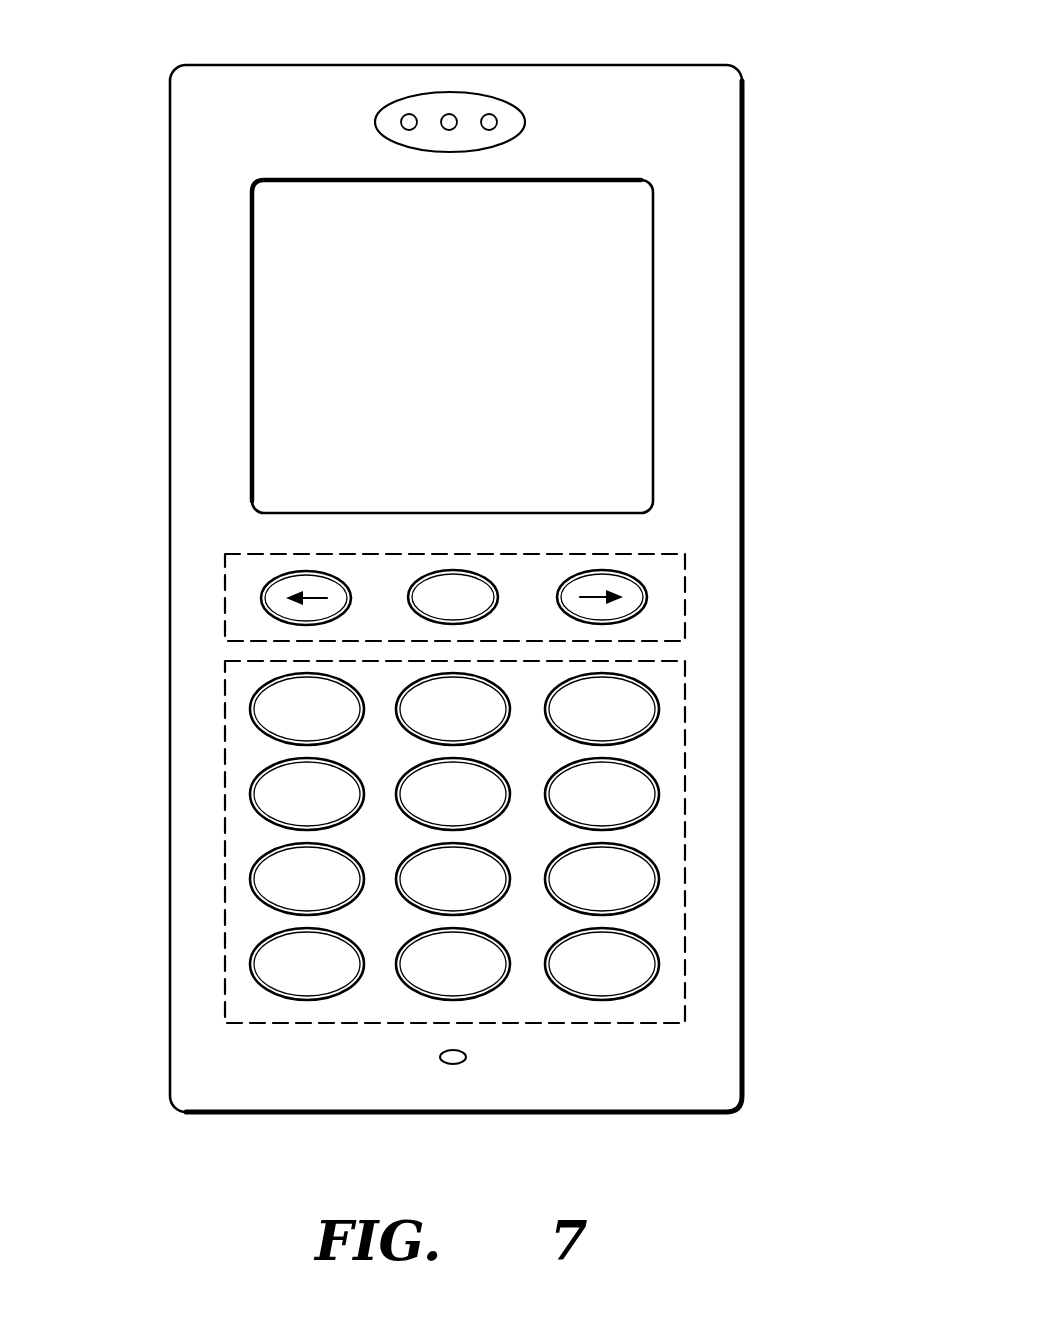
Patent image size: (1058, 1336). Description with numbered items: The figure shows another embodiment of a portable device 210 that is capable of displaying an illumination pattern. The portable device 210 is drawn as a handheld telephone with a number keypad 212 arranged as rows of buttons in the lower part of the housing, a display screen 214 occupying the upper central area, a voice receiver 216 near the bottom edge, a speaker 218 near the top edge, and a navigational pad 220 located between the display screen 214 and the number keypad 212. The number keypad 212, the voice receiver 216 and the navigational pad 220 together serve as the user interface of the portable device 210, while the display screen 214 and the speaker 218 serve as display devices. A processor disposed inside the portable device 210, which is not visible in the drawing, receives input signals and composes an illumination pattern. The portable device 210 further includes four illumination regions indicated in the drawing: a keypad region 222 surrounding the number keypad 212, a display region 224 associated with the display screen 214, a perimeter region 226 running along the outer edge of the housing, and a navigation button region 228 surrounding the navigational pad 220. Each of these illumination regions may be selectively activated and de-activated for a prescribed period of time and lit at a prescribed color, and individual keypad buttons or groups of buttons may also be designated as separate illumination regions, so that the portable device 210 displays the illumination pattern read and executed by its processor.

The portable device 210 is at (850, 90).
The number keypad 212 is at (365, 865).
The display screen 214 is at (444, 317).
The voice receiver 216 is at (466, 1056).
The speaker 218 is at (504, 99).
The navigational pad 220 is at (378, 577).
The keypad region 222 is at (455, 865).
The display region 224 is at (622, 180).
The perimeter region 226 is at (703, 65).
The navigation button region 228 is at (620, 553).